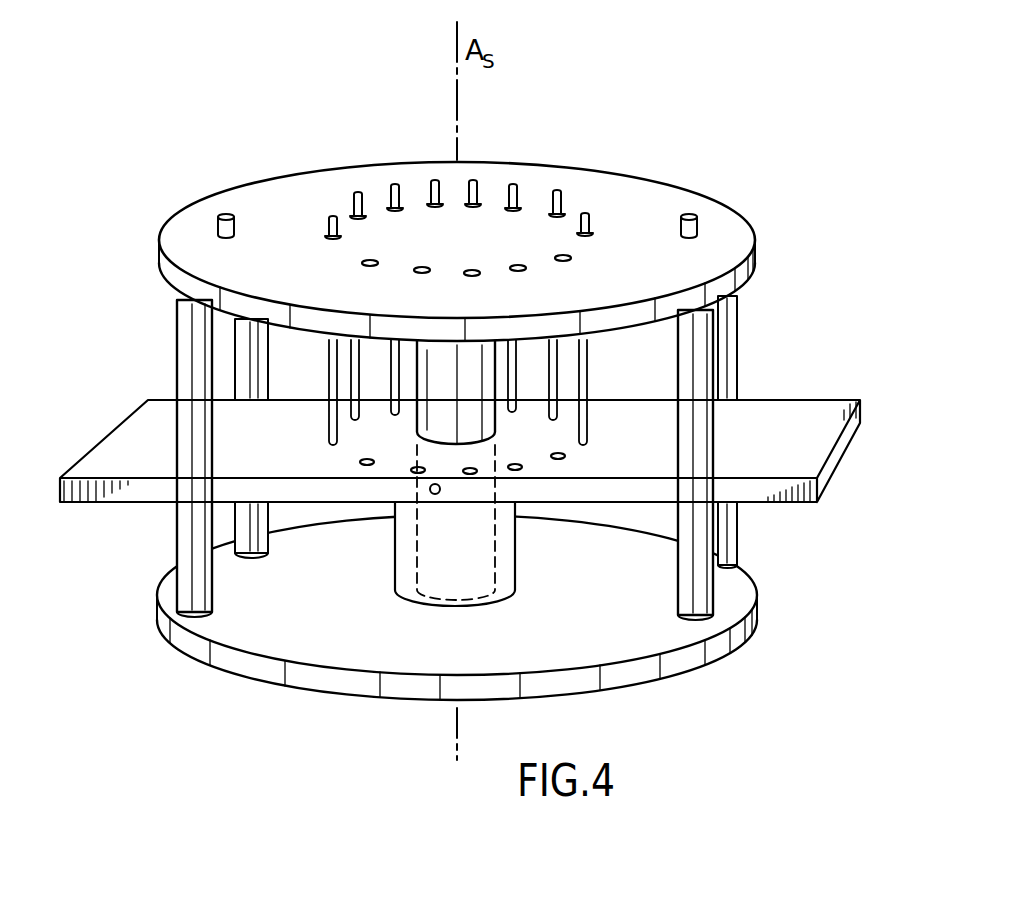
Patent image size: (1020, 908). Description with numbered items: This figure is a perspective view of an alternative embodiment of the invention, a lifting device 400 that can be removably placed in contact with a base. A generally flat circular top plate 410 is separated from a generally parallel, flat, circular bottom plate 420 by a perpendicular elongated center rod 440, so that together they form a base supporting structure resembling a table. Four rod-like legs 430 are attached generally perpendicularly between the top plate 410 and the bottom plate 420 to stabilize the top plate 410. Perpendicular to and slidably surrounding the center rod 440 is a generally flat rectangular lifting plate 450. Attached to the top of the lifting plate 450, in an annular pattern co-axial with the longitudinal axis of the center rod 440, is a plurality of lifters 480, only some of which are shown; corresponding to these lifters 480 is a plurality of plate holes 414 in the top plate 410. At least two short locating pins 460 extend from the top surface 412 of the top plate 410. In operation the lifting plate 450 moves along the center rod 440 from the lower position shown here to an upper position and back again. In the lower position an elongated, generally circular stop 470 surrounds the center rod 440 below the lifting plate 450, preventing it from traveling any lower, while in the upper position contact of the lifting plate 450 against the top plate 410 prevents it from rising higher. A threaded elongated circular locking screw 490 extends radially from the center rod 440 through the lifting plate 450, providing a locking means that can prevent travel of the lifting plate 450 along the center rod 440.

The lifting device 400 is at (496, 403).
The top plate 410 is at (514, 251).
The top surface 412 is at (717, 222).
The plate holes 414 is at (563, 218).
The bottom plate 420 is at (737, 593).
The legs 430 is at (722, 351).
The center rod 440 is at (462, 372).
The lifting plate 450 is at (775, 423).
The locating pins 460 is at (228, 215).
The stop 470 is at (505, 565).
The lifters 480 is at (585, 413).
The locking screw 490 is at (434, 495).